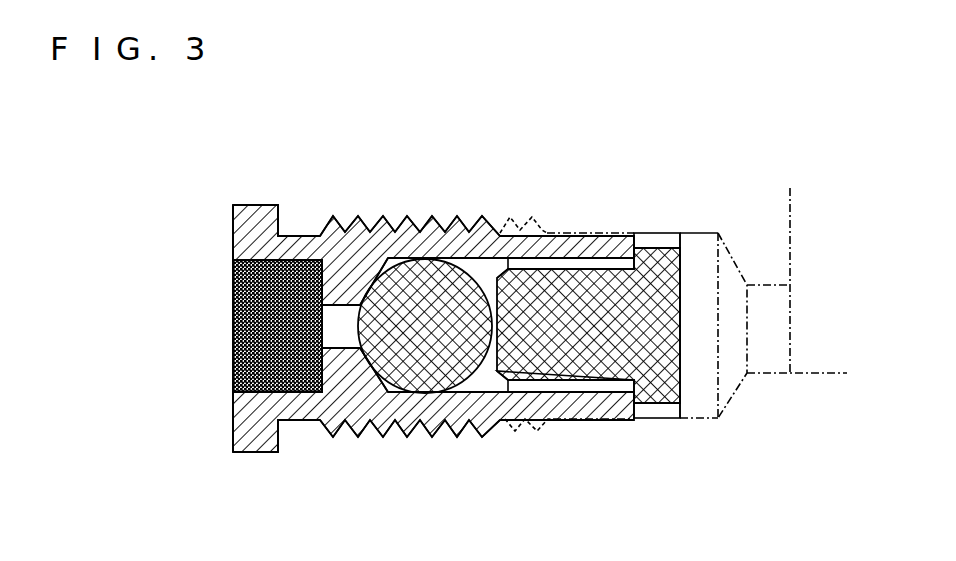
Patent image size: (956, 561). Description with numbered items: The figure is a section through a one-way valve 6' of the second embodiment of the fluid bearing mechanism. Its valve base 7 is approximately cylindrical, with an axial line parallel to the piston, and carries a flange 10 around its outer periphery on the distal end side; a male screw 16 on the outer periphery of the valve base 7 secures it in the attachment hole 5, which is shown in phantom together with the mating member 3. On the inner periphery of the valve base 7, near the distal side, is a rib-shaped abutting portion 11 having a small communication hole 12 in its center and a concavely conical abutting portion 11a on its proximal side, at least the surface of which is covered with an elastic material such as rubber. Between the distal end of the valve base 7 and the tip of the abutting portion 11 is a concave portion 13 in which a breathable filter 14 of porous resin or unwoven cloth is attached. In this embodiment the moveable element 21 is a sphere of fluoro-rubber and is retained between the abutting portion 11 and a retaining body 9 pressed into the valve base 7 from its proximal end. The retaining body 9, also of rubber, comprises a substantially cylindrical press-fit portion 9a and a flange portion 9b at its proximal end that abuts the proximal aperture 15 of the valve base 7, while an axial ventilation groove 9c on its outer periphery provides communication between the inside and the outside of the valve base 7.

The pipe 3 is at (832, 343).
The attachment hole 5 is at (560, 230).
The one-way valve 6' is at (240, 369).
The valve base 7 is at (353, 417).
The retaining body 9 is at (562, 347).
The press-fit portion 9a is at (562, 347).
The flange portion 9b is at (663, 390).
The ventilation groove 9c is at (608, 385).
The flange 10 is at (248, 217).
The abutting portion 11 is at (348, 358).
The abutting portion 11a is at (380, 262).
The communication hole 12 is at (333, 325).
The concave portion 13 is at (233, 368).
The breathable filter 14 is at (233, 368).
The proximal aperture 15 is at (613, 245).
The male screw 16 is at (333, 217).
The moveable element 21 is at (453, 365).